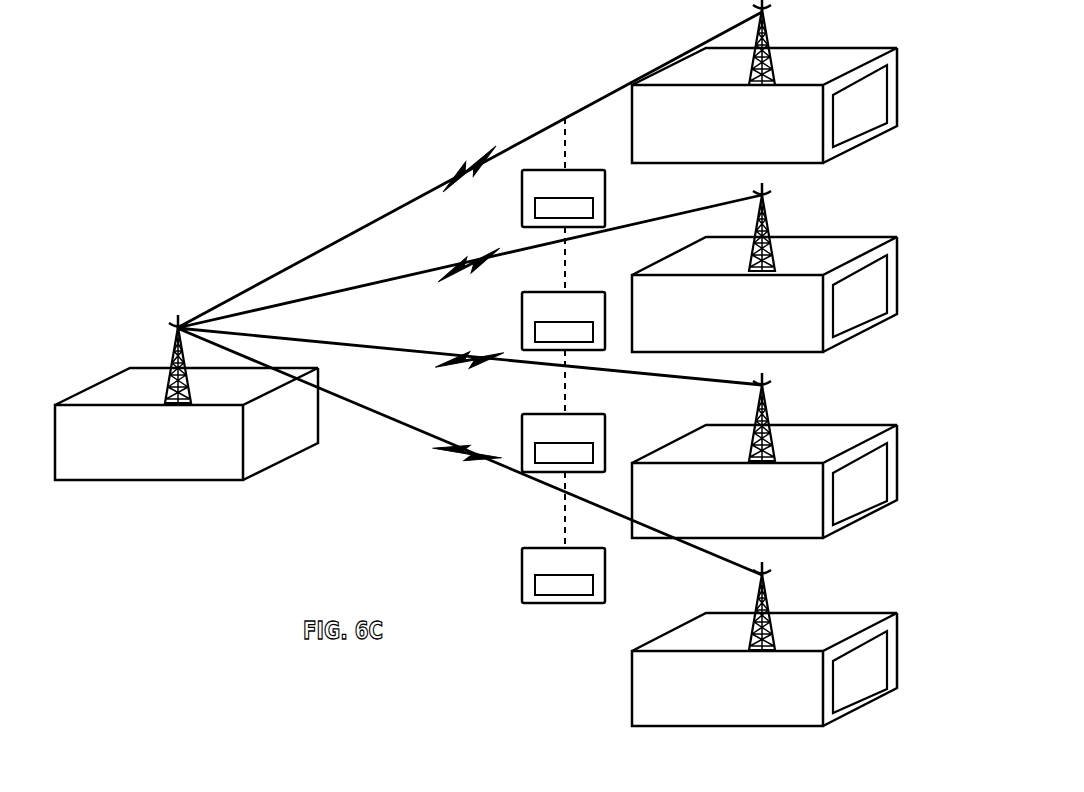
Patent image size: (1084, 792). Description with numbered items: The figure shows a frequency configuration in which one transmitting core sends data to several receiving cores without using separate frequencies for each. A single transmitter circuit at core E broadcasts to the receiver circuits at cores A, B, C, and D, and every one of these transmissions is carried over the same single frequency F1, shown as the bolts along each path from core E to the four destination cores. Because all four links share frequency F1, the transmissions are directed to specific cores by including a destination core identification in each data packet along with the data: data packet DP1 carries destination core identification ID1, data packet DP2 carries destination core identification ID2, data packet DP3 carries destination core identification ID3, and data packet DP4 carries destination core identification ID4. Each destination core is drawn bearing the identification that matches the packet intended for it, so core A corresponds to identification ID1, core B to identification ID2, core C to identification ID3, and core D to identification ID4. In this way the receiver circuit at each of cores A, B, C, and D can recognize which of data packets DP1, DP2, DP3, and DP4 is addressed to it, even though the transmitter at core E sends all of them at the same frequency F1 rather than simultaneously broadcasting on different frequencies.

The core E is at (186, 397).
The core A is at (764, 81).
The core B is at (764, 267).
The core C is at (764, 455).
The core D is at (764, 644).
The data packet DP1 is at (605, 196).
The data packet DP2 is at (605, 320).
The data packet DP3 is at (605, 443).
The data packet DP4 is at (605, 572).
The destination core identification ID1 is at (535, 214).
The destination core identification ID2 is at (535, 336).
The destination core identification ID3 is at (593, 462).
The destination core identification ID4 is at (535, 592).
The single frequency F1 is at (468, 294).